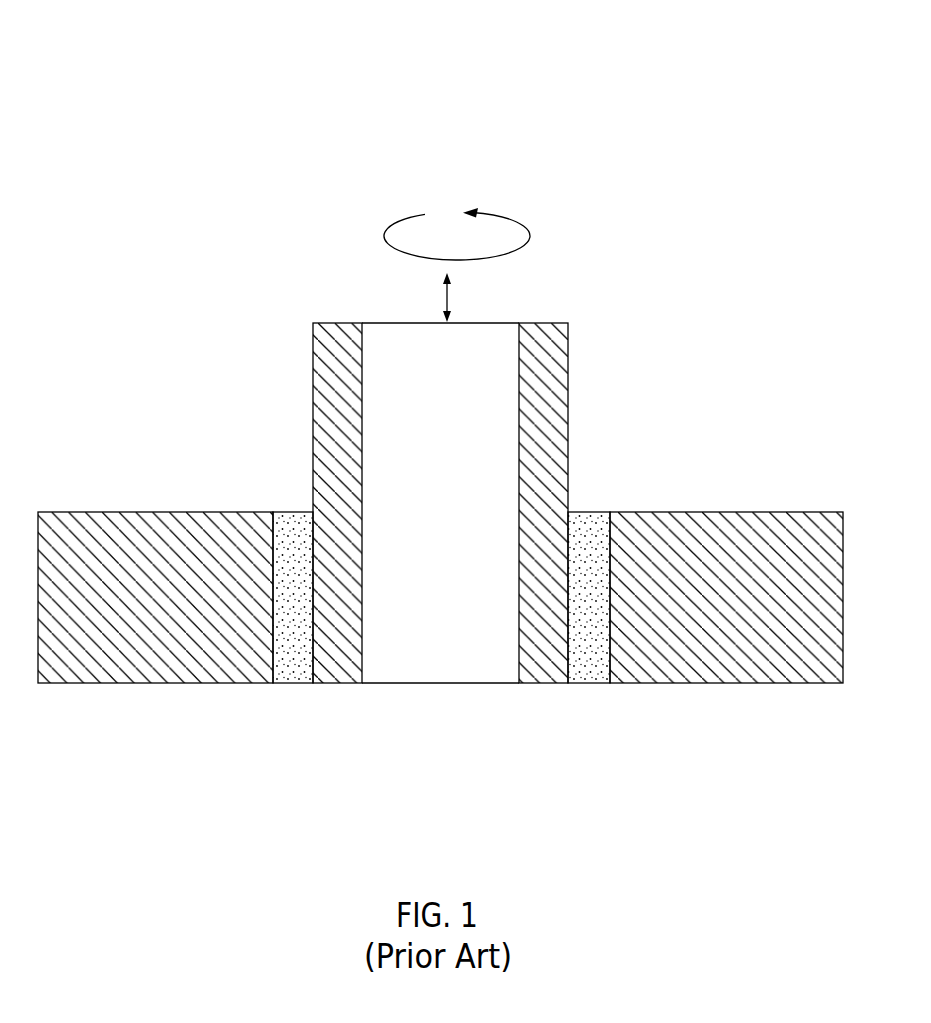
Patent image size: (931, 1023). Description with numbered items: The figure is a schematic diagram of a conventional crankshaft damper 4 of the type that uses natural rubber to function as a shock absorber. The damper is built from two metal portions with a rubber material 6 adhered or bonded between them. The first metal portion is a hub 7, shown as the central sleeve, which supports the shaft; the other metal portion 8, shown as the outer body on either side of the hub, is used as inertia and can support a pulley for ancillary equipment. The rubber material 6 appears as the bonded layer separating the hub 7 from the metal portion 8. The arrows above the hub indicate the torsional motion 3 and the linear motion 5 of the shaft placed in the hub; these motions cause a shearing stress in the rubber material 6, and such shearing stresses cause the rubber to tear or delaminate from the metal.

The crankshaft damper 4 is at (436, 44).
The torsional motion 3 is at (522, 218).
The linear motion 5 is at (450, 293).
The rubber material 6 is at (288, 511).
The hub 7 is at (338, 323).
The metal portion 8 is at (714, 512).